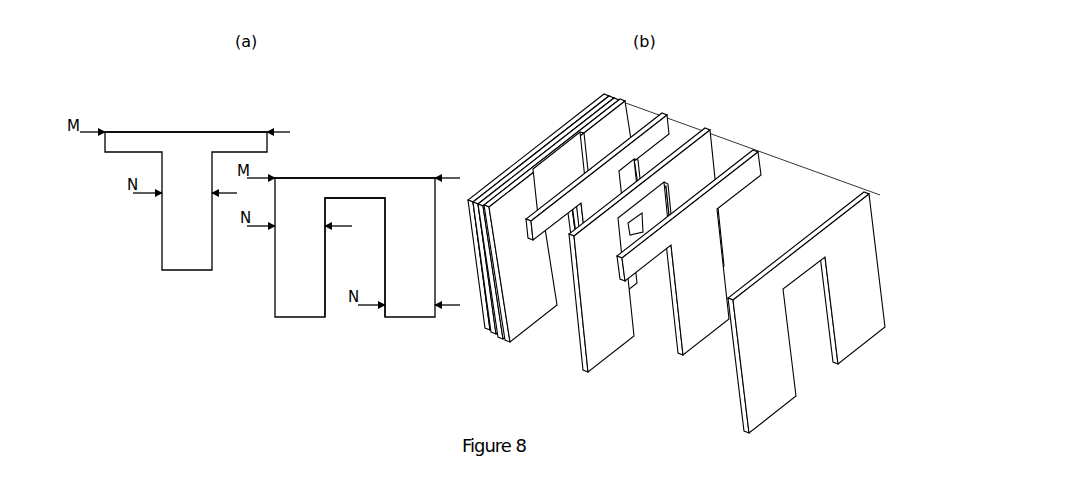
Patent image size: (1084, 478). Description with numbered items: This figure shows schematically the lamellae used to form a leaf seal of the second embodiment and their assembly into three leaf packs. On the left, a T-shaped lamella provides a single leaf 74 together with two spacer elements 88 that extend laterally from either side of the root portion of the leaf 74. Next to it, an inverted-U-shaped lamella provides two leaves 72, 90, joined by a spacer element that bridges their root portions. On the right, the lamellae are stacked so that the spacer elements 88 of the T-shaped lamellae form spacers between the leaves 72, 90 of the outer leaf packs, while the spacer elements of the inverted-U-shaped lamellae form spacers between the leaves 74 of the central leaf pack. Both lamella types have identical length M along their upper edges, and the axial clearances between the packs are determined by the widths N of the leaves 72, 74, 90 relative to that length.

The leaf 72 is at (298, 277).
The leaf 74 is at (173, 233).
The spacer element 88 is at (130, 140).
The leaf 90 is at (405, 243).